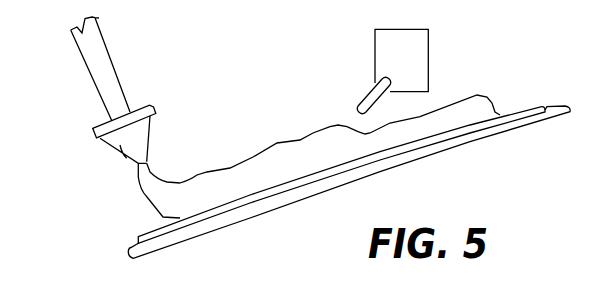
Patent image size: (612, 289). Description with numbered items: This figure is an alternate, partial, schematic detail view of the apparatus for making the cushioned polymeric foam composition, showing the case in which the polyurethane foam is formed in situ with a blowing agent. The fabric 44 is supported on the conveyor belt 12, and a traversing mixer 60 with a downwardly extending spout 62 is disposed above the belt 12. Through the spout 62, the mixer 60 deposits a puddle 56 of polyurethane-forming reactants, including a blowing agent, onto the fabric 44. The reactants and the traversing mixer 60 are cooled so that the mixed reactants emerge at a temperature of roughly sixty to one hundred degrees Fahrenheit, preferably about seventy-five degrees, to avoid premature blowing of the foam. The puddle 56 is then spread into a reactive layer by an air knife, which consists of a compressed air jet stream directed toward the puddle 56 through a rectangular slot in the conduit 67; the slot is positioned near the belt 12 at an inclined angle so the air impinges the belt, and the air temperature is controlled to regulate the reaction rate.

The conveyor belt 12 is at (223, 220).
The fabric 44 is at (418, 143).
The puddle 56 is at (227, 182).
The traversing mixer 60 is at (117, 68).
The spout 62 is at (123, 157).
The conduit 67 is at (428, 47).